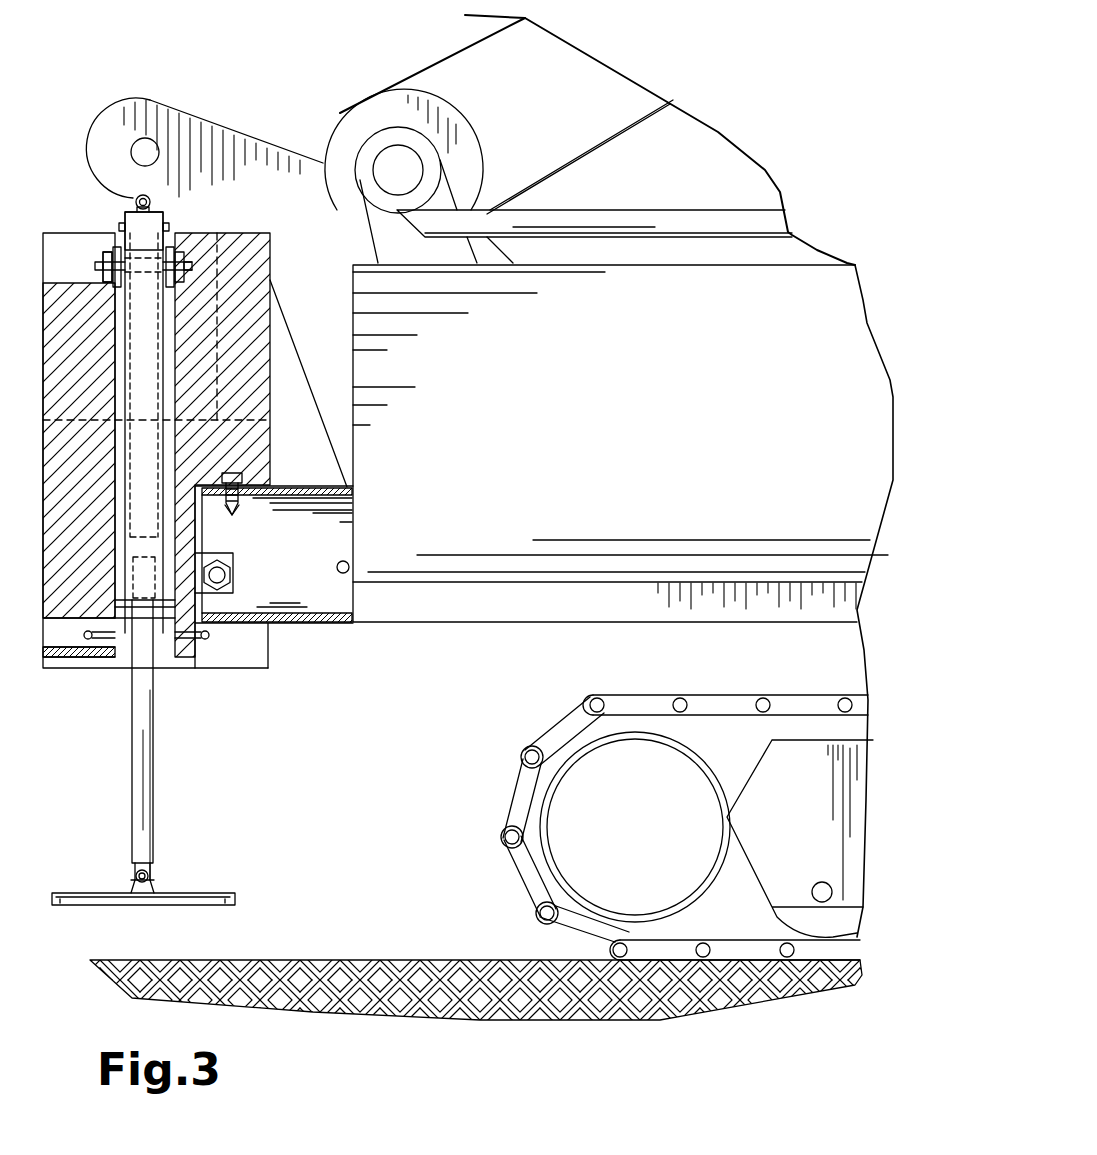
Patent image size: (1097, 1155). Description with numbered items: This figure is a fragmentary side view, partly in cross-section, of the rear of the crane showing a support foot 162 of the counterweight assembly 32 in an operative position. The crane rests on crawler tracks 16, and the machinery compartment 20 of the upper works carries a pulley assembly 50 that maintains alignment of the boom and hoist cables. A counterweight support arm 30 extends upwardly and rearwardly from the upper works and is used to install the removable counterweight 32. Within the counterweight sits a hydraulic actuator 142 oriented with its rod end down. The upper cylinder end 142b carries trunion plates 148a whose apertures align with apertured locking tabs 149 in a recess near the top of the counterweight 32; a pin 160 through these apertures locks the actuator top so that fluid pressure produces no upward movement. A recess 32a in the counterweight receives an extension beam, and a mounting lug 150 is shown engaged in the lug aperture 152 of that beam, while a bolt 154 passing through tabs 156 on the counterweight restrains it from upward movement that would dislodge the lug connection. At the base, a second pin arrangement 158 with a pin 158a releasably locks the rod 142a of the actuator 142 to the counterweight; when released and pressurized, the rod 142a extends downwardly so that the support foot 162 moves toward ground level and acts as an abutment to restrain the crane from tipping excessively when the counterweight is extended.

The tracks 16 is at (638, 696).
The machinery compartment 20 is at (648, 412).
The counterweight support arm 30 is at (213, 130).
The counterweight assembly 32 is at (53, 337).
The recess 32a is at (235, 638).
The pulley assembly 50 is at (500, 157).
The hydraulic actuator 142 is at (120, 206).
The rod end 142a is at (137, 763).
The cylinder upper end 142b is at (150, 227).
The trunion plates 148a is at (118, 258).
The locking tabs 149 is at (110, 278).
The mounting lug 150 is at (238, 513).
The lug aperture 152 is at (243, 475).
The bolt 154 is at (230, 562).
The tabs 156 is at (203, 593).
The second pin arrangement 158 is at (203, 647).
The pin 158a is at (100, 645).
The pin 160 is at (107, 268).
The support foot 162 is at (207, 893).